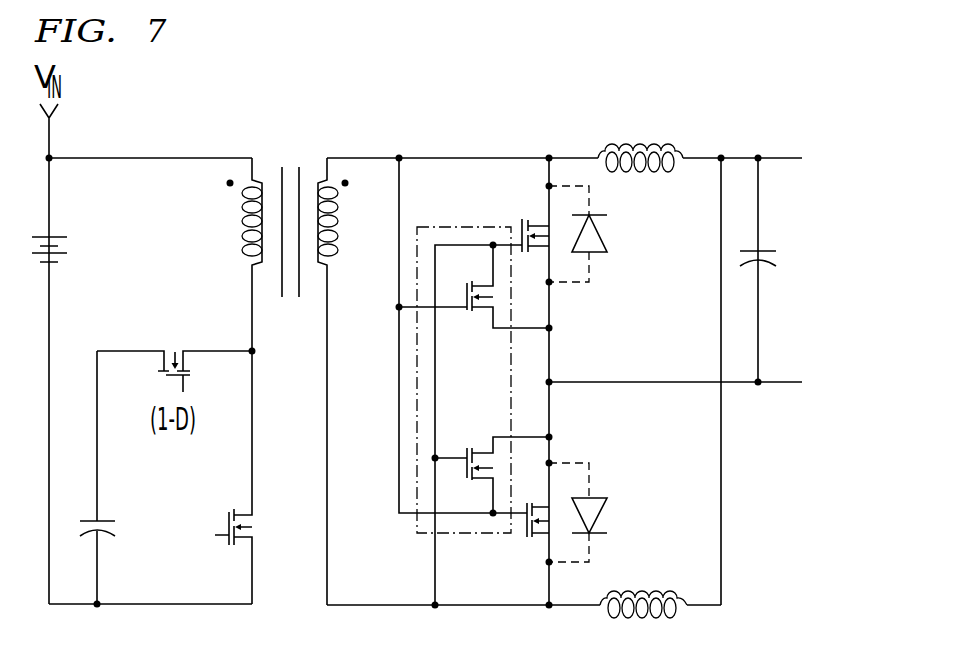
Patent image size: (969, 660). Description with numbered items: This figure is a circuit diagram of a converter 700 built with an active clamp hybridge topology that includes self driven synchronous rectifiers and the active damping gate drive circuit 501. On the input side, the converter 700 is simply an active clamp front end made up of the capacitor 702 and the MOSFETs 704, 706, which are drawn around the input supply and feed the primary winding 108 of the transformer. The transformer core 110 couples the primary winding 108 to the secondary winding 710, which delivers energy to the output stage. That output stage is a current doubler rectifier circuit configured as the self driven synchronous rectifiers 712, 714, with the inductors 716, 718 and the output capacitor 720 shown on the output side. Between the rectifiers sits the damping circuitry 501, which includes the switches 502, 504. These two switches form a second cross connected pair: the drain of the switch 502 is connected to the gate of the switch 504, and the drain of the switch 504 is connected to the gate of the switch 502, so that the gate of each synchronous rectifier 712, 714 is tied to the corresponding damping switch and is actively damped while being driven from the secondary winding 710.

The primary winding of transformer 108 is at (240, 245).
The transformer core 110 is at (287, 165).
The secondary winding of transformer 710 is at (334, 256).
The converter 700 is at (519, 124).
The active damping gate drive circuit 501 is at (440, 226).
The self driven synchronous rectifier 712 is at (525, 221).
The switch 502 is at (468, 313).
The switch 504 is at (468, 450).
The self driven synchronous rectifier 714 is at (526, 540).
The output inductor 716 is at (624, 150).
The output inductor 718 is at (656, 593).
The output capacitor 720 is at (778, 259).
The capacitor 702 is at (115, 527).
The MOSFET 704 is at (160, 373).
The MOSFET 706 is at (228, 510).